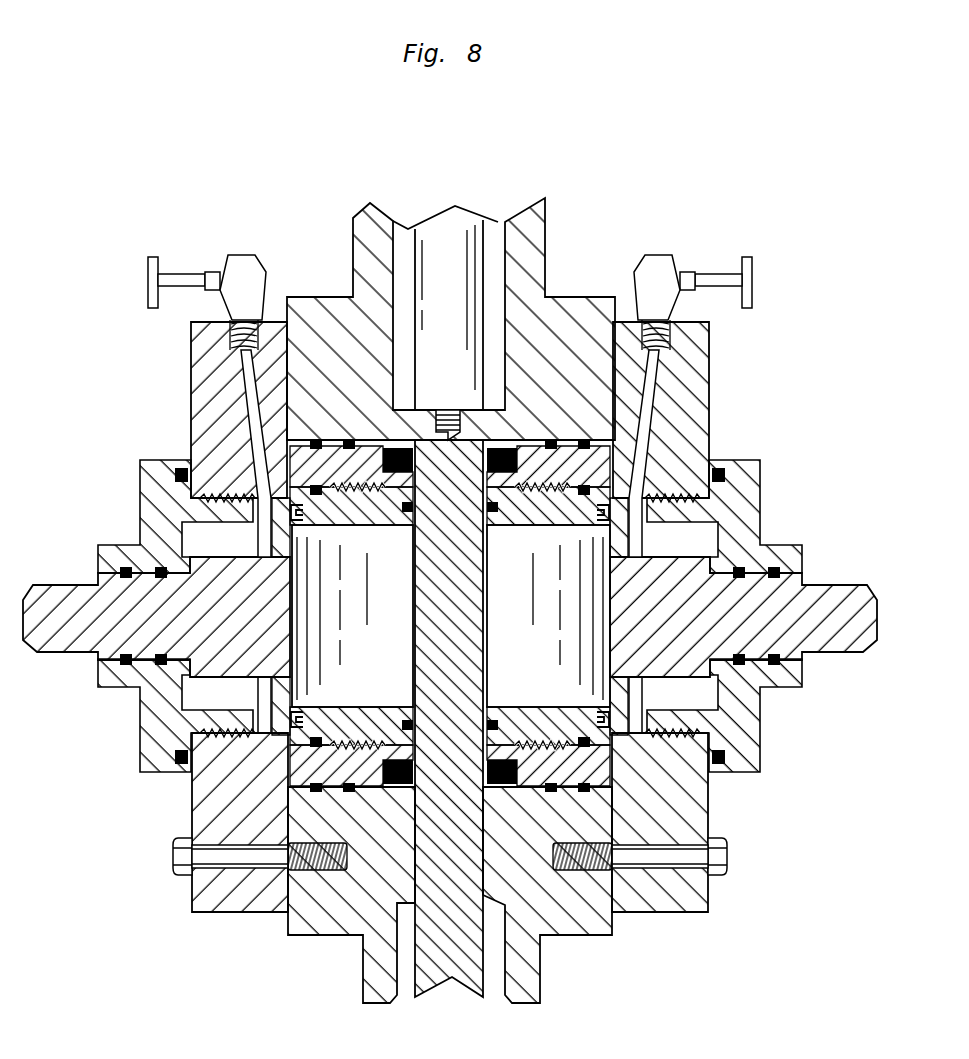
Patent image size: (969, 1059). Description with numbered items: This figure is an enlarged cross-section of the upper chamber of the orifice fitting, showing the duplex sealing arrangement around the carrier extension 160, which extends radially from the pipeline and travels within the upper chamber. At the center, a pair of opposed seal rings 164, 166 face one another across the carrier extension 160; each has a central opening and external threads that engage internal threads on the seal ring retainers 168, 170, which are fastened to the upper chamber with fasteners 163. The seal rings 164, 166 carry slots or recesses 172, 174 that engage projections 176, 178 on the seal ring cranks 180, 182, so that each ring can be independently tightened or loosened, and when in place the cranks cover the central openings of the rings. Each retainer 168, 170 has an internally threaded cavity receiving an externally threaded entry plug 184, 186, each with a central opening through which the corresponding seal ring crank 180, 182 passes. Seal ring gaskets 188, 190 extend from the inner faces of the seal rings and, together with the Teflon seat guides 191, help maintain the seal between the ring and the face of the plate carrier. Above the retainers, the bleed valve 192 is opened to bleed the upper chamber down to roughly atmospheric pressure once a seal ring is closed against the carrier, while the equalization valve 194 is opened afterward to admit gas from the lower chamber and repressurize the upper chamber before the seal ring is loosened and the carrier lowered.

The carrier extension 160 is at (485, 960).
The fasteners 163 is at (178, 875).
The seal ring 164 is at (290, 512).
The seal ring 166 is at (610, 512).
The seal ring retainer 168 is at (191, 385).
The seal ring retainer 170 is at (710, 385).
The slot or recess 172 is at (288, 748).
The slot or recess 174 is at (612, 748).
The projection 176 is at (277, 737).
The projection 178 is at (612, 737).
The seal ring crank 180 is at (80, 585).
The seal ring crank 182 is at (822, 580).
The entry plug 184 is at (140, 480).
The entry plug 186 is at (760, 478).
The seal ring gasket 188 is at (383, 487).
The seal ring gasket 190 is at (500, 493).
The Teflon seat guide 191 is at (507, 790).
The bleed valve 192 is at (668, 252).
The equalization valve 194 is at (235, 255).